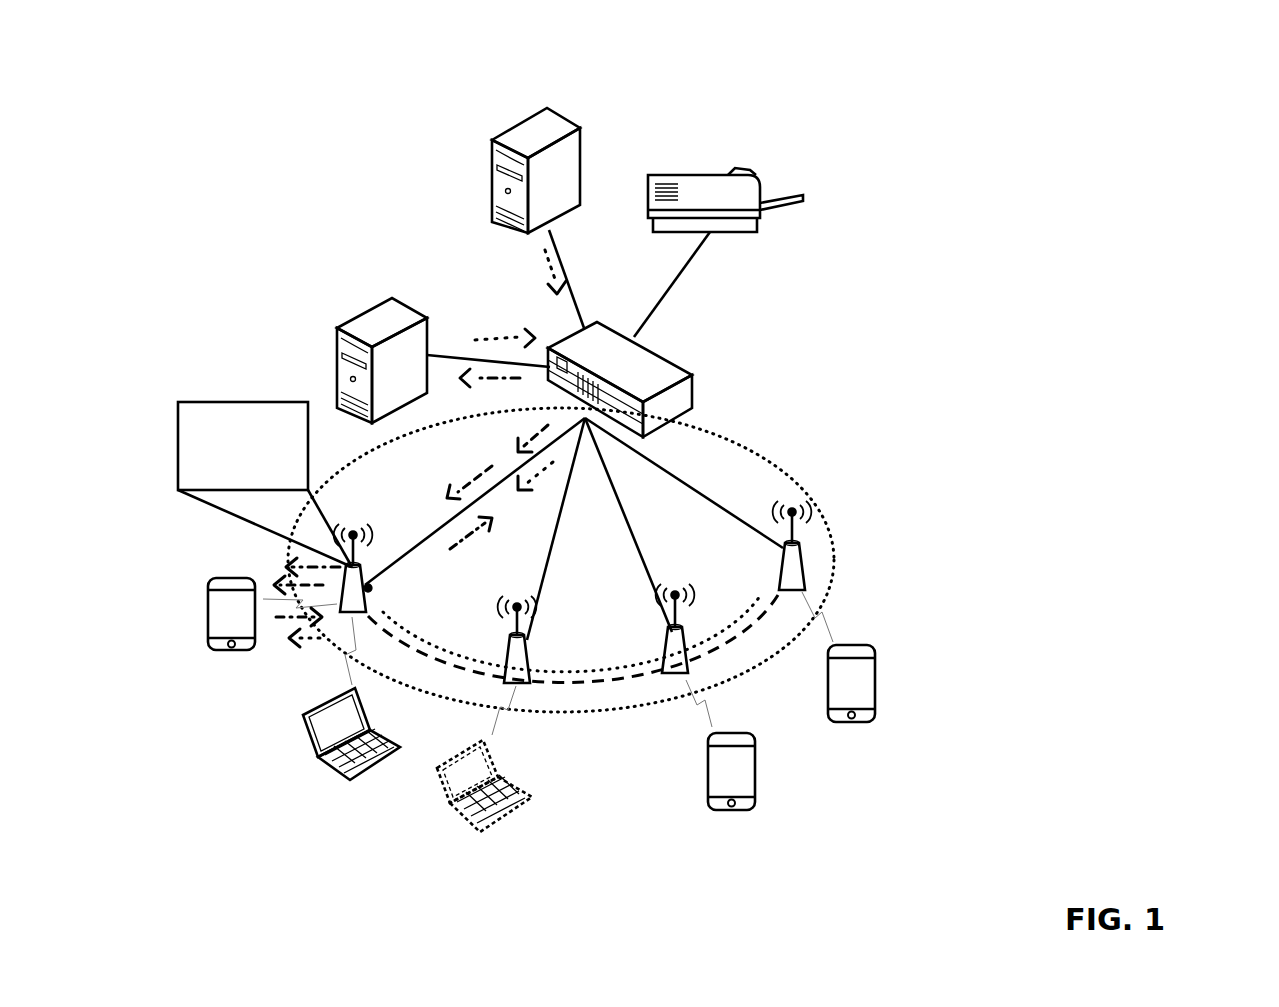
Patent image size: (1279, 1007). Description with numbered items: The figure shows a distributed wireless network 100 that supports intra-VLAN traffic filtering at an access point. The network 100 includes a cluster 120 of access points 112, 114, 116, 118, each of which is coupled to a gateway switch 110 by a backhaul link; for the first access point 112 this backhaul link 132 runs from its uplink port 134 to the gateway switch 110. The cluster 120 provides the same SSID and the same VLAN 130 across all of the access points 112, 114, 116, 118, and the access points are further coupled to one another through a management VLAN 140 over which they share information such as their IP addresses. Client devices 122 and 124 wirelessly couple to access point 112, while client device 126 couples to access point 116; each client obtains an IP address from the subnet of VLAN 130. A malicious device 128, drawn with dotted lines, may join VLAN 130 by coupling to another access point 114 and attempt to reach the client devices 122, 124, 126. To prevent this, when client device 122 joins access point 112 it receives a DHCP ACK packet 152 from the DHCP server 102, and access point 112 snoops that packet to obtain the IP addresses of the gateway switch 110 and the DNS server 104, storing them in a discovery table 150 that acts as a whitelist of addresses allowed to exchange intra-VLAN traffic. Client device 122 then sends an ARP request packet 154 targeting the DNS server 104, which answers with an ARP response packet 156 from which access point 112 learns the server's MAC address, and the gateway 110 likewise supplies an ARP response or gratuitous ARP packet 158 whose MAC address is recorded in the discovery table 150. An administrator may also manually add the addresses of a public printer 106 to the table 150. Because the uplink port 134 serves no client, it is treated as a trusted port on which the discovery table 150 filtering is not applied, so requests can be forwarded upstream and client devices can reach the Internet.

The distributed wireless network 100 is at (1102, 150).
The DHCP server 102 is at (566, 117).
The DNS server 104 is at (360, 309).
The public printer 106 is at (703, 174).
The gateway switch 110 is at (662, 357).
The access point 112 is at (365, 587).
The access point 114 is at (512, 661).
The access point 116 is at (667, 648).
The access point 118 is at (780, 571).
The cluster of access points 120 is at (836, 550).
The client device 122 is at (231, 654).
The client device 124 is at (370, 777).
The client device 126 is at (733, 813).
The malicious device 128 is at (518, 815).
The VLAN 130 is at (587, 685).
The backhaul link 132 is at (440, 529).
The uplink port 134 is at (368, 567).
The management VLAN 140 is at (564, 667).
The discovery table 150 is at (228, 478).
The DHCP ACK packet 152 is at (545, 284).
The ARP request packet 154 is at (281, 622).
The ARP response packet 156 is at (487, 339).
The ARP response or gratuitous ARP packet 158 is at (530, 447).